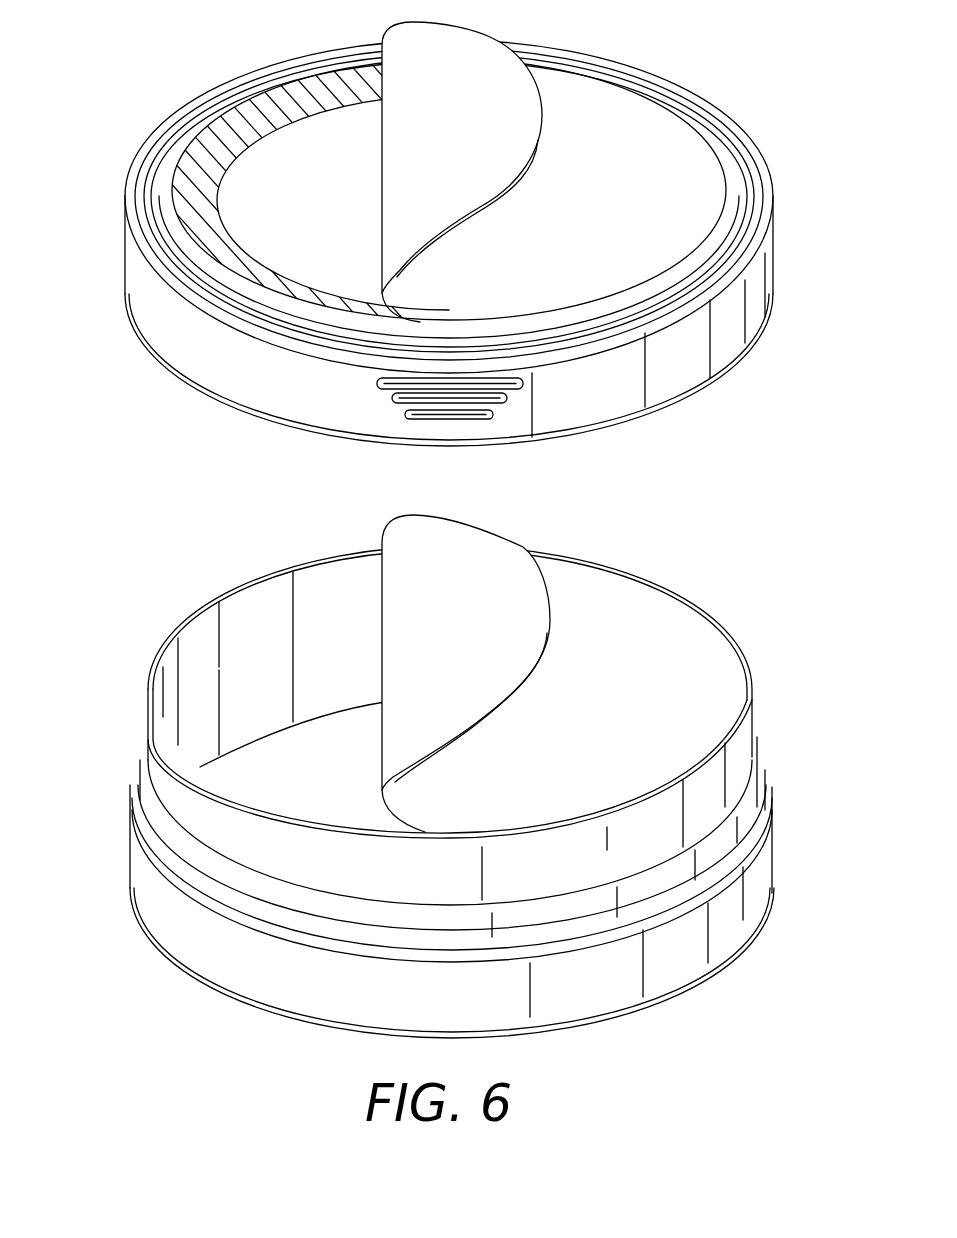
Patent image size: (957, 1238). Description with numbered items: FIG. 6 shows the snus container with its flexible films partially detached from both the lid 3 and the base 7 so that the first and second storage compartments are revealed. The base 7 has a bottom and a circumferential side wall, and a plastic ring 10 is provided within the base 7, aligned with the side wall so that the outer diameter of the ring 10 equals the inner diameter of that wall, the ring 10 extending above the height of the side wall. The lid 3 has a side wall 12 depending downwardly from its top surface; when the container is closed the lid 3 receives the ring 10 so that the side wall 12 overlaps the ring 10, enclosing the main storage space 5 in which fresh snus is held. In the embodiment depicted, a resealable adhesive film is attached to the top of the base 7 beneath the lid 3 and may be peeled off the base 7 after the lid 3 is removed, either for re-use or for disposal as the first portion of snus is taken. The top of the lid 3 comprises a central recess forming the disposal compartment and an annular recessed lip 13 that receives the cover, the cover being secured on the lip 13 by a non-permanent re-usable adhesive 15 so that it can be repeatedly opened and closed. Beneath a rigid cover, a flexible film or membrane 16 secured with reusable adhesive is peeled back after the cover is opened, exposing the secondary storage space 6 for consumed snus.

The lid 3 is at (760, 283).
The main storage space 5 is at (257, 747).
The secondary storage space 6 is at (267, 117).
The base 7 is at (760, 872).
The ring 10 is at (740, 747).
The side wall 12 is at (127, 275).
The annular recessed lip 13 is at (210, 140).
The non-permanent re-usable adhesive 15 is at (297, 155).
The flexible film 16 is at (658, 104).